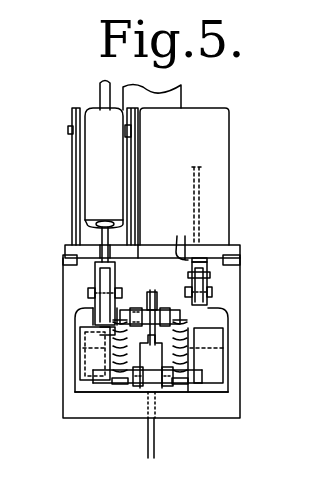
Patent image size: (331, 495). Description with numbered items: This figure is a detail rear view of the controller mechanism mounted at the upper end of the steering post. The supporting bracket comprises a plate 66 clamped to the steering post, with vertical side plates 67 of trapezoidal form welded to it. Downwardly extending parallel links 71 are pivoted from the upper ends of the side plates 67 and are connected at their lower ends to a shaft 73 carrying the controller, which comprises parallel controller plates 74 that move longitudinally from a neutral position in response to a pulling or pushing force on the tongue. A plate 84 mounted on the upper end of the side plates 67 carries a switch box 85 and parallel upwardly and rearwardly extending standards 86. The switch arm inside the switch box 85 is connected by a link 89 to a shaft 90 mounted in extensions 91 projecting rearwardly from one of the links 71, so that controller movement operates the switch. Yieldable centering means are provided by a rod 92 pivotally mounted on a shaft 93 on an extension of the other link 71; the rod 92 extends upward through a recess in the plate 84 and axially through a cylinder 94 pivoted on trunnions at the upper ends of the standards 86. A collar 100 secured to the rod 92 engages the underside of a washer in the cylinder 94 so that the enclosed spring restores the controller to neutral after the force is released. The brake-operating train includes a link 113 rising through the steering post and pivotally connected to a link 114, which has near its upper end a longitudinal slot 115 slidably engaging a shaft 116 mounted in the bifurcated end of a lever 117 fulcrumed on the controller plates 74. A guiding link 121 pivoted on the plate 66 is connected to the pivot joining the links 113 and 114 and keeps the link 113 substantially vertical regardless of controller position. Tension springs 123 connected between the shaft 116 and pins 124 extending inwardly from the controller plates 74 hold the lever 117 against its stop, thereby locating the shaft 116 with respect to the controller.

The rod 92 is at (100, 82).
The standards 86 is at (76, 157).
The cylinder 94 is at (93, 165).
The collar 100 is at (95, 219).
The switch box 85 is at (229, 163).
The link 89 is at (202, 262).
The plate 84 is at (232, 247).
The shaft 90 is at (213, 283).
The extensions 91 is at (176, 236).
The shaft 93 is at (90, 293).
The side plates 67 is at (70, 315).
The plate 66 is at (218, 402).
The tension springs 123 is at (75, 337).
The links 71 is at (83, 347).
The controller plates 74 is at (108, 368).
The shaft 73 is at (103, 393).
The pins 124 is at (113, 395).
The link 114 is at (138, 388).
The guiding link 121 is at (145, 393).
The link 113 is at (154, 448).
The longitudinal slot 115 is at (155, 303).
The shaft 116 is at (125, 310).
The lever 117 is at (143, 310).